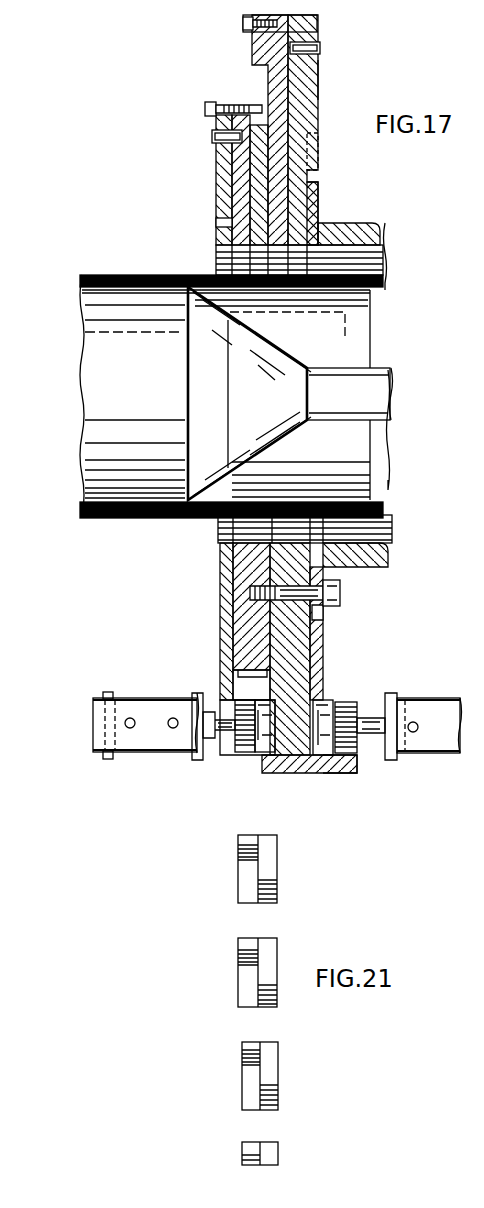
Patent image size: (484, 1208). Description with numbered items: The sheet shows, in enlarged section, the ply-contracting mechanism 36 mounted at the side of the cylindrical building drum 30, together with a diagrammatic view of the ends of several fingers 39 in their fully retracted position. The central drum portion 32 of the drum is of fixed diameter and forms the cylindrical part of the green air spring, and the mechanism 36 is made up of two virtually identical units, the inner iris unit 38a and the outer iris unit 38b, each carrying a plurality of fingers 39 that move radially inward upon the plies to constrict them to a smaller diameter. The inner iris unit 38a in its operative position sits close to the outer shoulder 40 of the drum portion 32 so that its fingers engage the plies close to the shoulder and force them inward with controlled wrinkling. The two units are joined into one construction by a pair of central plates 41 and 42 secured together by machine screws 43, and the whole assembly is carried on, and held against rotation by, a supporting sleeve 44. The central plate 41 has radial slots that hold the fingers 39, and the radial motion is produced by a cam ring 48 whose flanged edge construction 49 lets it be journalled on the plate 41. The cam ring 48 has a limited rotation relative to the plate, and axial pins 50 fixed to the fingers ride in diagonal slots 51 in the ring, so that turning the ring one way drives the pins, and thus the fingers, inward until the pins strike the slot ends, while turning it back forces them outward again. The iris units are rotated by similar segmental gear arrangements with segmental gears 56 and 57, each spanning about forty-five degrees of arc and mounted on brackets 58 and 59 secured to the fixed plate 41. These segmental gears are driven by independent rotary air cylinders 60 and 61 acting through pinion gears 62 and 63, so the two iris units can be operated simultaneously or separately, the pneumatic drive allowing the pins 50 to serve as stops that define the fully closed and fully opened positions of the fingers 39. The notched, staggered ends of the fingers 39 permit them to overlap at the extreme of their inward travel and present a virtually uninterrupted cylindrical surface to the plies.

In FIG. 17, the cylindrical building drum 30 is at (117, 274).
In FIG. 17, the central drum portion 32 is at (93, 328).
In FIG. 17, the ply-contracting mechanism 36 is at (335, 104).
In FIG. 17, the inner iris unit 38a is at (214, 164).
In FIG. 17, the outer iris unit 38b is at (320, 79).
In FIG. 17, the fingers 39 is at (238, 197).
In FIG. 21, the fingers 39 is at (277, 943).
In FIG. 17, the outer shoulder 40 is at (195, 364).
In FIG. 17, the central plate 41 is at (262, 125).
In FIG. 17, the central plate 42 is at (277, 70).
In FIG. 17, the machine screws 43 is at (340, 592).
In FIG. 17, the supporting sleeve 44 is at (370, 228).
In FIG. 17, the cam ring 48 is at (223, 237).
In FIG. 17, the flanged edge construction 49 is at (247, 104).
In FIG. 17, the axial pins 50 is at (212, 137).
In FIG. 17, the diagonal slots 51 is at (222, 222).
In FIG. 17, the segmental gear 56 is at (215, 698).
In FIG. 17, the segmental gear 57 is at (330, 773).
In FIG. 17, the bracket 58 is at (250, 690).
In FIG. 17, the bracket 59 is at (290, 773).
In FIG. 17, the rotary air cylinder 60 is at (152, 752).
In FIG. 17, the rotary air cylinder 61 is at (435, 755).
In FIG. 17, the pinion gear 62 is at (245, 752).
In FIG. 17, the pinion gear 63 is at (340, 702).